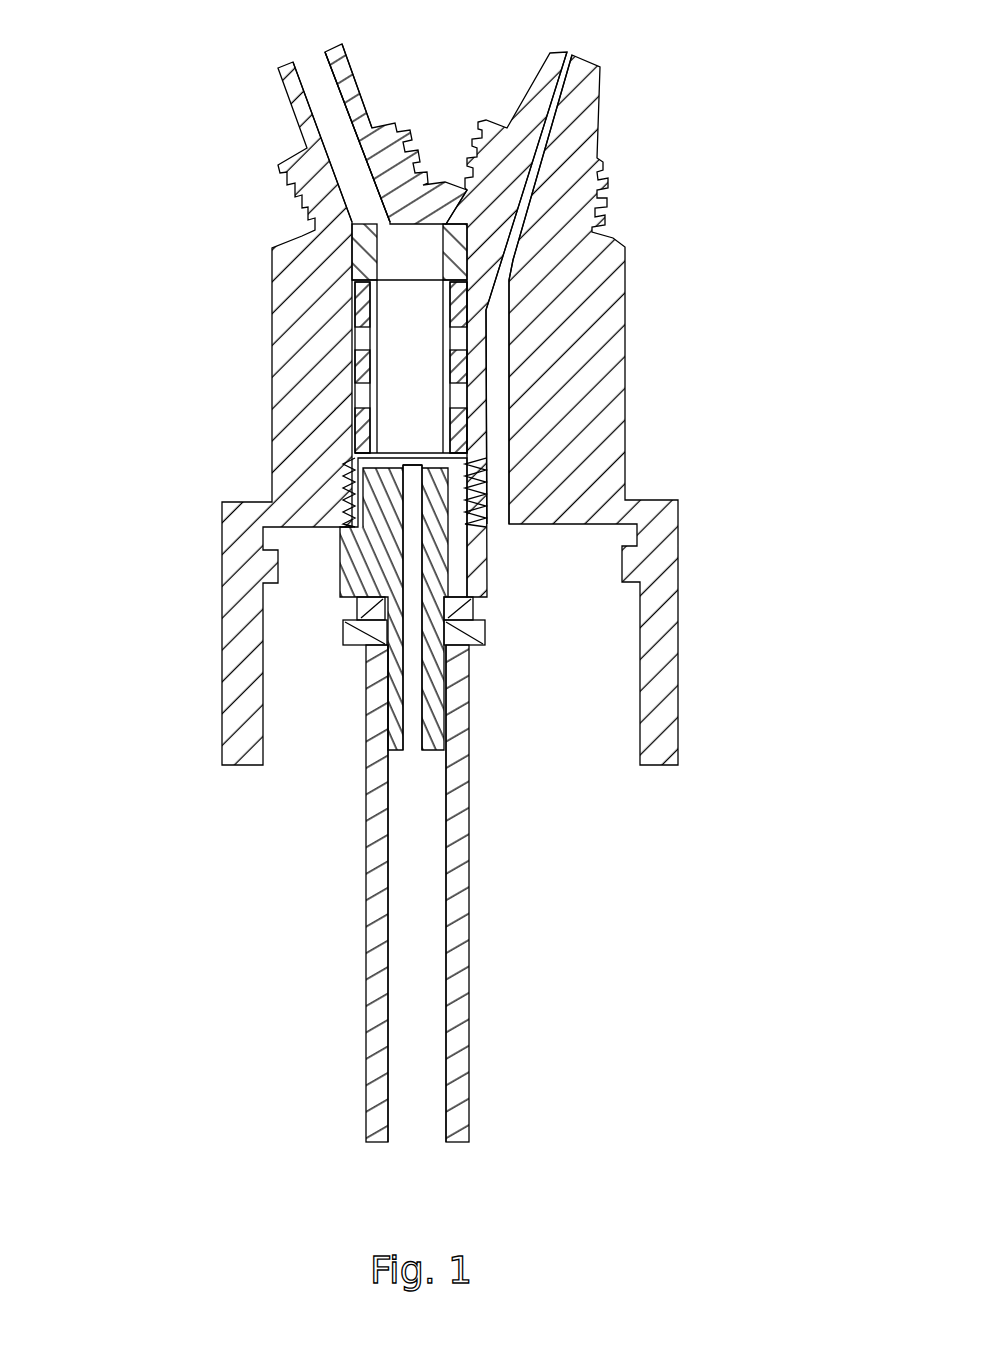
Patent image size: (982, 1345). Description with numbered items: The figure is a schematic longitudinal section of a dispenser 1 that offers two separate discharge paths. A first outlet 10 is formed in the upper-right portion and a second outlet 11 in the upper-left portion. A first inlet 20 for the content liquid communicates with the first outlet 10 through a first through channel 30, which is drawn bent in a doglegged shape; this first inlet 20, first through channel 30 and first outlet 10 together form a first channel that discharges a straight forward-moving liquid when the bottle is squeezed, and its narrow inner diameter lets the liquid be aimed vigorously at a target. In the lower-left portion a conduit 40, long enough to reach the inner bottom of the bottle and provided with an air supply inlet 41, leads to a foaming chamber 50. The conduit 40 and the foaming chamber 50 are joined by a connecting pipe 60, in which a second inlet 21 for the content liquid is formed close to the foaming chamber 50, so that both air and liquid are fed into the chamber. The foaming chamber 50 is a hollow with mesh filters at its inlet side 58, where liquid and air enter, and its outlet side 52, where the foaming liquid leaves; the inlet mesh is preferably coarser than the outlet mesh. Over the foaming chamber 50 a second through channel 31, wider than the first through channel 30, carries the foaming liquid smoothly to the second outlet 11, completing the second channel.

The dispenser 1 is at (424, 618).
The first outlet 10 is at (579, 57).
The second outlet 11 is at (310, 56).
The first inlet 20 is at (497, 517).
The second inlet 21 is at (348, 607).
The first through channel 30 is at (498, 373).
The second through channel 31 is at (343, 164).
The conduit 40 is at (468, 981).
The air supply inlet 41 is at (422, 1100).
The foaming chamber 50 is at (407, 357).
The outlet side 52 is at (407, 273).
The inlet side 58 is at (410, 466).
The connecting pipe 60 is at (360, 545).